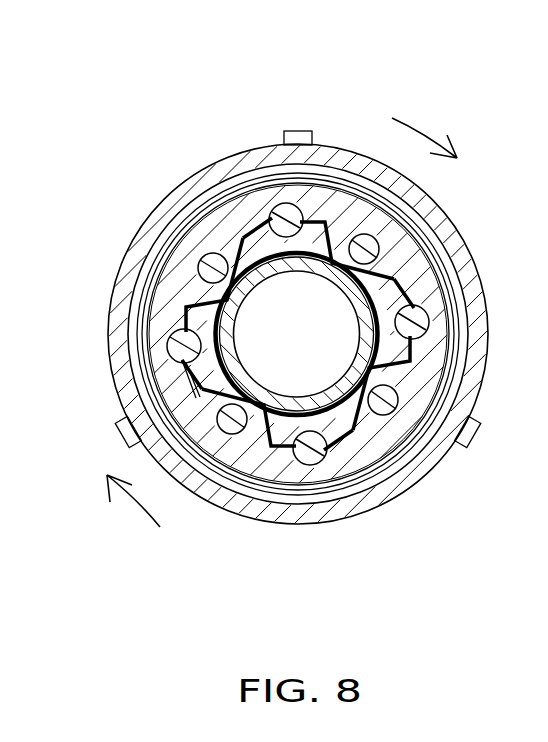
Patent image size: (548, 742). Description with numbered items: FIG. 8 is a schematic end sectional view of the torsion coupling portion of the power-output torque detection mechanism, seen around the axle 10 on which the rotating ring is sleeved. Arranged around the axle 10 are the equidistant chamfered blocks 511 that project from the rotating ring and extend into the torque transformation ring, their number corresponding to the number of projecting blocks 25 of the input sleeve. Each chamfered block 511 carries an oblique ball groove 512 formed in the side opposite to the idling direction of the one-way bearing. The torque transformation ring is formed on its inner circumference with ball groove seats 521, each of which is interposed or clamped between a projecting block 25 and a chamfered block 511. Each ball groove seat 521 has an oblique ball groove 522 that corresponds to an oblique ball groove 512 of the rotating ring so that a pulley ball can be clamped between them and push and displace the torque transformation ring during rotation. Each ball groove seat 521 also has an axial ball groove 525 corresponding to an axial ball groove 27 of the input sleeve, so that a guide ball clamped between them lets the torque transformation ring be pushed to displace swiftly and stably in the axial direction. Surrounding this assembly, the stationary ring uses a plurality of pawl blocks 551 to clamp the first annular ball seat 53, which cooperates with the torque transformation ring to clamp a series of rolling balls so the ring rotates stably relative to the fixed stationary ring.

The axle 10 is at (384, 264).
The projecting blocks 25 is at (192, 390).
The axial ball grooves 27 is at (170, 347).
The first annular ball seat 53 is at (348, 167).
The chamfered blocks 511 is at (281, 232).
The oblique ball groove 512 is at (177, 218).
The ball groove seats 521 is at (190, 292).
The oblique ball groove 522 is at (197, 268).
The axial ball groove 525 is at (166, 356).
The pawl blocks 551 is at (290, 130).